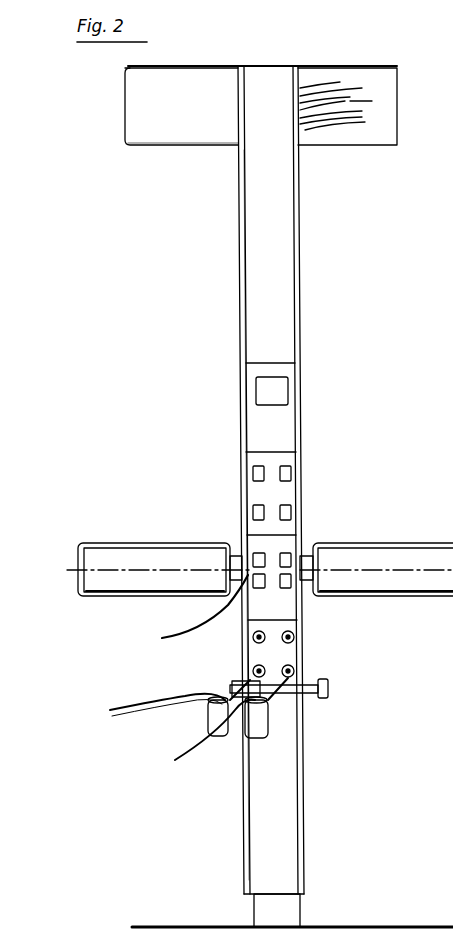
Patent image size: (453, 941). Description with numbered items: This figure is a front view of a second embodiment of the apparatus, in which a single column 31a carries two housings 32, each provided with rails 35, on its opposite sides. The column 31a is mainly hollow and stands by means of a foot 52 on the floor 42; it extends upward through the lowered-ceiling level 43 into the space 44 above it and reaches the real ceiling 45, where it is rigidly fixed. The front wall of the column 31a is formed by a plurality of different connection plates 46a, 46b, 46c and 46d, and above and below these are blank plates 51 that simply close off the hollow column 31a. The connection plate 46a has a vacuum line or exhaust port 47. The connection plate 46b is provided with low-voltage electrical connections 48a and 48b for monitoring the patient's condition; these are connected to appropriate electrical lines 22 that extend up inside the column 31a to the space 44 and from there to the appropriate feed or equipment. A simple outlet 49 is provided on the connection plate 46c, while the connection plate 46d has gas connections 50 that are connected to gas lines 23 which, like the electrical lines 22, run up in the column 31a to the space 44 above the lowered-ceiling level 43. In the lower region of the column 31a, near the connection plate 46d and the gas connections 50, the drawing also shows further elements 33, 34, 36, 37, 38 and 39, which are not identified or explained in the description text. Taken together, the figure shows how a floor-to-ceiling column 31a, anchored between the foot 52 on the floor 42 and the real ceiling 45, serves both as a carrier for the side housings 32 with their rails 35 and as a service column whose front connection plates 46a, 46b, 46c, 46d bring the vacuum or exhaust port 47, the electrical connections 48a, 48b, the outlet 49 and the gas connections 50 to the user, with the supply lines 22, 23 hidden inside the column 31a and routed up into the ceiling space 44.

The electrical lines 22 is at (388, 118).
The gas lines 23 is at (377, 100).
The column 31a is at (305, 290).
The housings 32 is at (100, 552).
The nut 33 is at (312, 694).
The bolt 34 is at (328, 686).
The rails 35 is at (108, 598).
The plugs 36 is at (255, 725).
The cable 37 is at (185, 750).
The wires 38 is at (250, 672).
The cable 39 is at (205, 618).
The floor 42 is at (348, 925).
The lowered-ceiling level 43 is at (150, 146).
The space 44 is at (121, 80).
The real ceiling 45 is at (336, 66).
The connection plate 46a is at (287, 418).
The connection plate 46b is at (286, 460).
The connection plate 46c is at (287, 536).
The connection plate 46d is at (252, 656).
The vacuum line or exhaust port 47 is at (270, 384).
The low-voltage electrical connections 48a is at (284, 468).
The low-voltage electrical connections 48b is at (284, 507).
The simple outlet 49 is at (265, 560).
The gas connections 50 is at (296, 640).
The blank plates 51 is at (250, 222).
The foot 52 is at (262, 910).